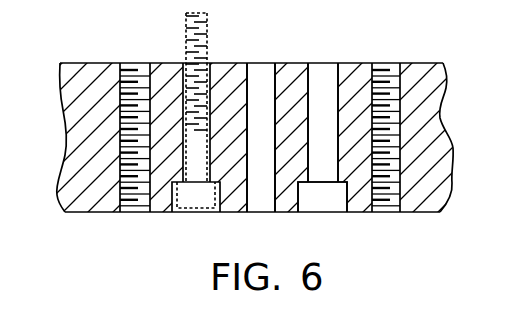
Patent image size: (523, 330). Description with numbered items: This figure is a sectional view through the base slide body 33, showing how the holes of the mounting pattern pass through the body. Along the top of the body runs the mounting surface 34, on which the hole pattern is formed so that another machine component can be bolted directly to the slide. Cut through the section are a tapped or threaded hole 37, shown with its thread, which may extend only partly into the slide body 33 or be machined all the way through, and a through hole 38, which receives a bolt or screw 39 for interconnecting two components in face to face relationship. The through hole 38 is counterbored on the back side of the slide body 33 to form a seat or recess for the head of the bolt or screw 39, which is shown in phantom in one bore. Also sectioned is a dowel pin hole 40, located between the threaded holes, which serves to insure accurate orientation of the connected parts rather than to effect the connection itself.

The base slide body 33 is at (85, 197).
The mounting surface 34 is at (83, 63).
The tapped or threaded hole 37 is at (388, 72).
The through hole 38 is at (327, 78).
The bolt or screw 39 is at (208, 44).
The dowel pin hole 40 is at (271, 193).